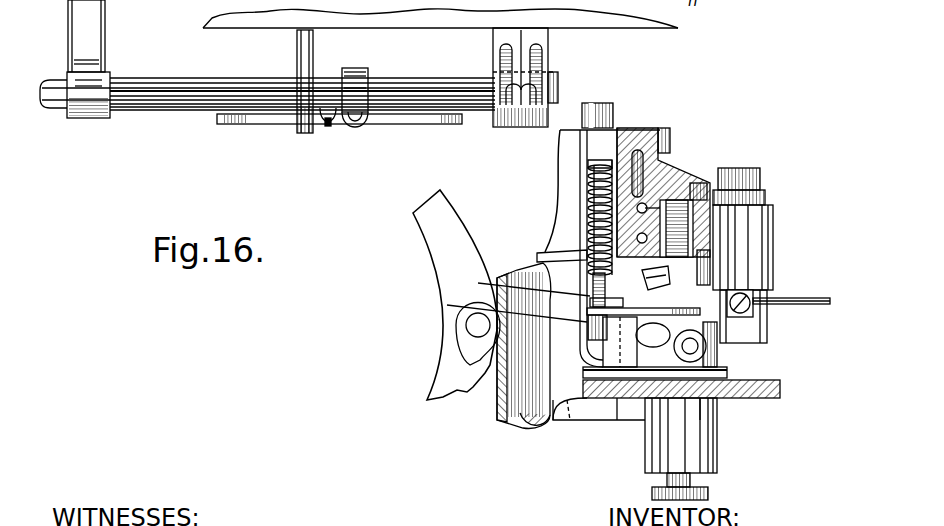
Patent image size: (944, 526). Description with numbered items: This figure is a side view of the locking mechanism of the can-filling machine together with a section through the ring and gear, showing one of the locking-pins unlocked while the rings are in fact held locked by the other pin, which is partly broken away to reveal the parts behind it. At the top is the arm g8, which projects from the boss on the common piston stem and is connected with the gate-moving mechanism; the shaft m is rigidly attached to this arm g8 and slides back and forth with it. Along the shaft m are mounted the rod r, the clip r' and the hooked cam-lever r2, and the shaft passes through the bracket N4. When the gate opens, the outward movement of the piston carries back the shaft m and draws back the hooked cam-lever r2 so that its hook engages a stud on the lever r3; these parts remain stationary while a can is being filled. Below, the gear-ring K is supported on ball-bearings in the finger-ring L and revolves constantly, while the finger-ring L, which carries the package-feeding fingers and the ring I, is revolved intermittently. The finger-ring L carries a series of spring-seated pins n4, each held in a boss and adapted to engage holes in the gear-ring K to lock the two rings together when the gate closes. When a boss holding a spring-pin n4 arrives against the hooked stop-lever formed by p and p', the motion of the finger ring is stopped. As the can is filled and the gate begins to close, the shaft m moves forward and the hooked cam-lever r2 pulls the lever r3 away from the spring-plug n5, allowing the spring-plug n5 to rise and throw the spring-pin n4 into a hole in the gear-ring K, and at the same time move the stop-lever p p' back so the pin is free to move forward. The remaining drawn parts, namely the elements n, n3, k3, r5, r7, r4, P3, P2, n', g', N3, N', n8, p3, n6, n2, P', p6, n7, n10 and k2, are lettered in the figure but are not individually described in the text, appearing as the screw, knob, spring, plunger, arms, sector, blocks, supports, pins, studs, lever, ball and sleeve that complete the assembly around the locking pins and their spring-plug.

The arm g8 is at (100, 9).
The shaft m is at (174, 108).
The rod r is at (317, 81).
The clip r' is at (354, 112).
The hooked cam-lever r2 is at (276, 122).
The bracket N4 is at (548, 37).
The pin n is at (453, 328).
The lever r3 is at (613, 115).
The gear-ring K is at (668, 135).
The finger-ring L is at (668, 176).
The screw n3 is at (690, 182).
The knob k3 is at (760, 178).
The spring seat r5 is at (582, 168).
The spring r7 is at (590, 188).
The plunger r4 is at (592, 212).
The hooked stop-lever p' is at (590, 259).
The hooked lever p is at (580, 282).
The arm P3 is at (521, 284).
The arm P2 is at (503, 308).
The cam lobe n' is at (484, 344).
The sector g' is at (447, 295).
The block N3 is at (510, 393).
The support N' is at (520, 433).
The pin n8 is at (567, 420).
The pin p3 is at (617, 417).
The stud n6 is at (645, 462).
The spring-plug n5 is at (760, 298).
The plate n2 is at (733, 400).
The ring I is at (773, 399).
The lever P' is at (772, 316).
The pin p6 is at (716, 343).
The ball n7 is at (698, 350).
The spring plate n10 is at (690, 366).
The spring-seated pin n4 is at (596, 290).
The sleeve k2 is at (612, 341).